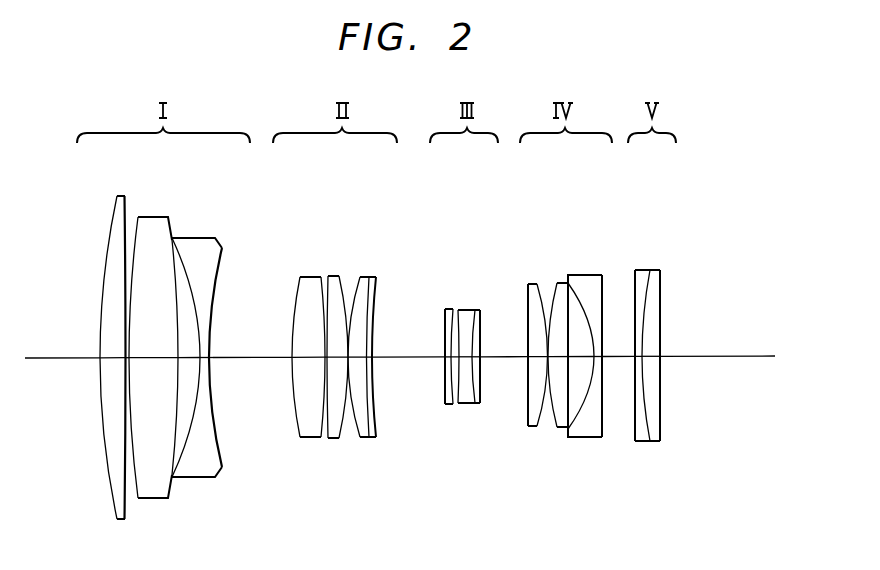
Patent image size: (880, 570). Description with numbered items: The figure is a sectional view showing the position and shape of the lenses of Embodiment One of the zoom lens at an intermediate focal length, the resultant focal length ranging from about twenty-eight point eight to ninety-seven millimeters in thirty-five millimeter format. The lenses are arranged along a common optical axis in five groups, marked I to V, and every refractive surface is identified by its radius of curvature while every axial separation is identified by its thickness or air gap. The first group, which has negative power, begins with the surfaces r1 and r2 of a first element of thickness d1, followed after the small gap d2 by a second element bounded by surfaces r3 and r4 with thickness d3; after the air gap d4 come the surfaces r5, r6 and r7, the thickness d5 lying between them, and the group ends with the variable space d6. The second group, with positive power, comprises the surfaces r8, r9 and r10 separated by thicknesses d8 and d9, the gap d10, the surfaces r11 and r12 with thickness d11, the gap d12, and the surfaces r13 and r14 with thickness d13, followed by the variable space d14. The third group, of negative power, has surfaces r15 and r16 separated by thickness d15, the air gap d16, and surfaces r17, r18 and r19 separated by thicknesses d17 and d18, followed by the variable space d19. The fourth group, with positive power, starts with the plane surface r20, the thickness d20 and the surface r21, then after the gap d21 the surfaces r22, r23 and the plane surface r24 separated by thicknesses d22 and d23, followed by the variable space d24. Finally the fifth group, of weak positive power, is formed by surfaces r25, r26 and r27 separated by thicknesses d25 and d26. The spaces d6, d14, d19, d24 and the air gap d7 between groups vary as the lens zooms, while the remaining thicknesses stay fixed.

The radius of curvature of the first lens surface r1 is at (113, 233).
The radius of curvature of the second lens surface r2 is at (126, 199).
The radius of curvature of the third lens surface r3 is at (136, 258).
The radius of curvature of the fourth lens surface r4 is at (177, 267).
The radius of curvature of the fifth lens surface r5 is at (174, 263).
The radius of curvature of the sixth lens surface r6 is at (182, 252).
The radius of curvature of the seventh lens surface r7 is at (222, 282).
The radius of curvature of the eighth lens surface r8 is at (295, 290).
The radius of curvature of the ninth lens surface r9 is at (302, 276).
The radius of curvature of the tenth lens surface r10 is at (324, 277).
The radius of curvature of the eleventh lens surface r11 is at (338, 276).
The radius of curvature of the twelfth lens surface r12 is at (344, 278).
The radius of curvature of the thirteenth lens surface r13 is at (370, 276).
The radius of curvature of the fourteenth lens surface r14 is at (378, 279).
The radius of curvature of the fifteenth lens surface r15 is at (445, 348).
The radius of curvature of the sixteenth lens surface r16 is at (449, 315).
The radius of curvature of the seventeenth lens surface r17 is at (459, 312).
The radius of curvature of the eighteenth lens surface r18 is at (471, 310).
The radius of curvature of the nineteenth lens surface r19 is at (480, 310).
The radius of curvature of the twentieth lens surface r20 is at (528, 306).
The radius of curvature of the twenty-first lens surface r21 is at (540, 300).
The radius of curvature of the twenty-second lens surface r22 is at (556, 292).
The radius of curvature of the twenty-third lens surface r23 is at (578, 290).
The radius of curvature of the twenty-fourth lens surface r24 is at (604, 287).
The radius of curvature of the twenty-fifth lens surface r25 is at (635, 288).
The radius of curvature of the twenty-sixth lens surface r26 is at (647, 290).
The radius of curvature of the twenty-seventh lens surface r27 is at (661, 288).
The axial thickness between the first and second surfaces d1 is at (103, 362).
The axial distance between the second and third surfaces d2 is at (125, 353).
The axial thickness between the third and fourth surfaces d3 is at (128, 370).
The axial distance between the fourth and fifth surfaces d4 is at (143, 343).
The axial thickness between the fifth and sixth surfaces d5 is at (188, 355).
The axial distance following the seventh surface d6 is at (203, 362).
The axial air space between group I and group II d7 is at (236, 361).
The axial thickness between the eighth and ninth surfaces d8 is at (293, 355).
The axial thickness between the ninth and tenth surfaces d9 is at (323, 358).
The axial distance between the tenth and eleventh surfaces d10 is at (325, 353).
The axial thickness between the eleventh and twelfth surfaces d11 is at (345, 362).
The axial distance between the twelfth and thirteenth surfaces d12 is at (352, 367).
The axial thickness between the thirteenth and fourteenth surfaces d13 is at (358, 368).
The axial distance following the fourteenth surface d14 is at (398, 357).
The axial thickness between the fifteenth and sixteenth surfaces d15 is at (447, 366).
The axial distance between the sixteenth and seventeenth surfaces d16 is at (452, 362).
The axial thickness between the seventeenth and eighteenth surfaces d17 is at (463, 403).
The axial thickness between the eighteenth and nineteenth surfaces d18 is at (473, 390).
The axial distance following the nineteenth surface d19 is at (486, 360).
The axial thickness between the twentieth and twenty-first surfaces d20 is at (532, 355).
The axial distance between the twenty-first and twenty-second surfaces d21 is at (550, 354).
The axial thickness between the twenty-second and twenty-third surfaces d22 is at (556, 372).
The axial thickness between the twenty-third and twenty-fourth surfaces d23 is at (586, 400).
The axial distance following the twenty-fourth surface d24 is at (612, 392).
The axial thickness between the twenty-fifth and twenty-sixth surfaces d25 is at (657, 382).
The axial thickness between the twenty-sixth and twenty-seventh surfaces d26 is at (652, 362).